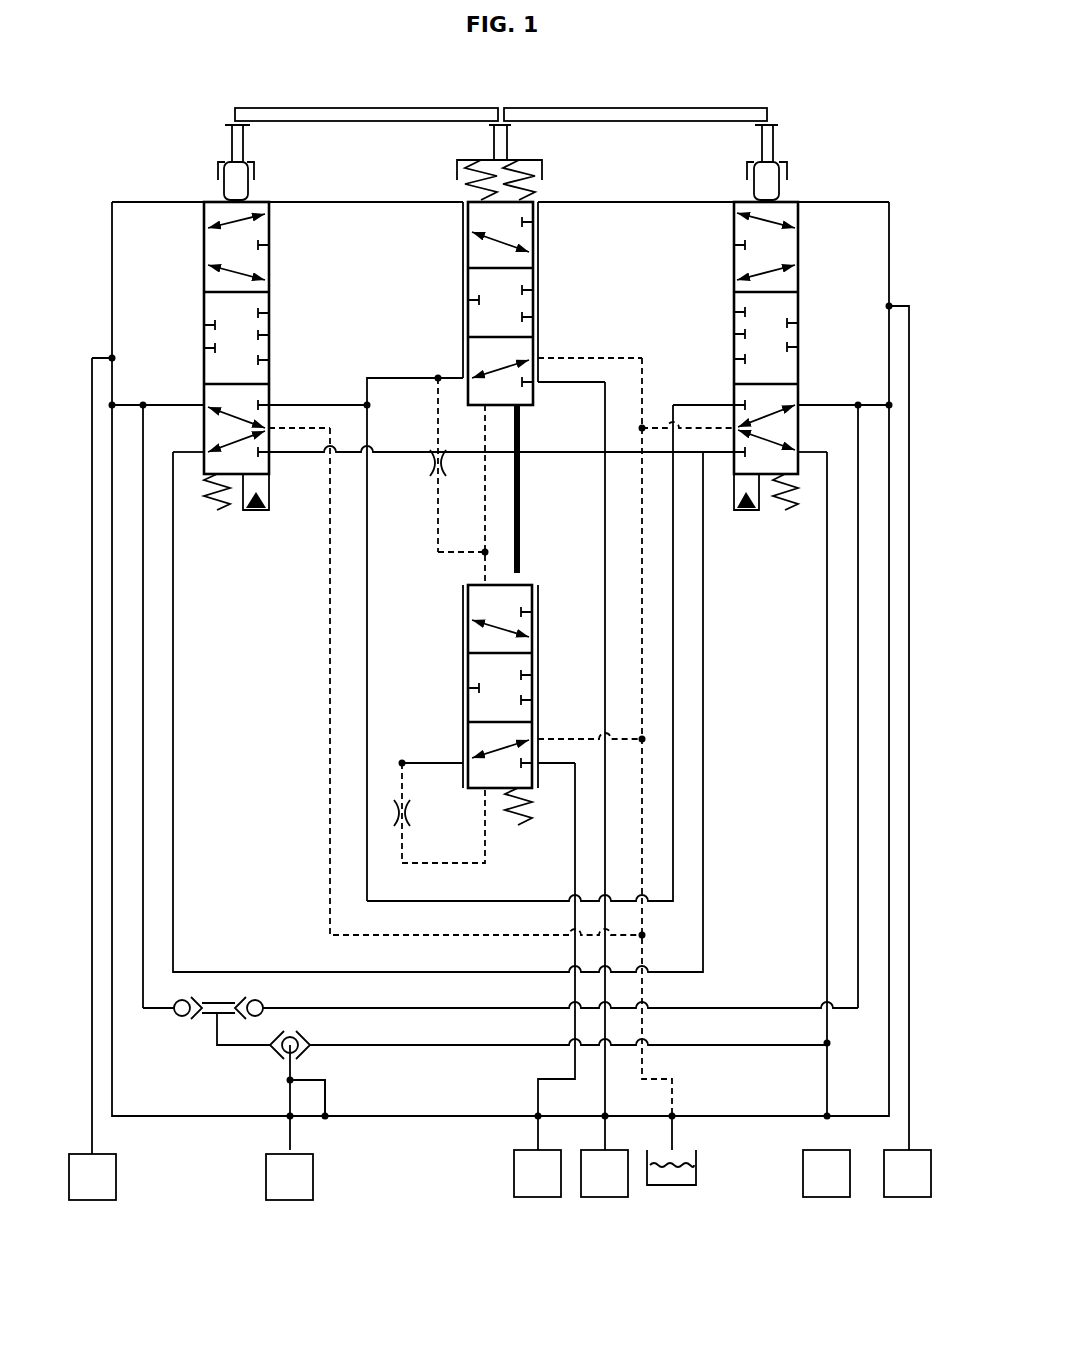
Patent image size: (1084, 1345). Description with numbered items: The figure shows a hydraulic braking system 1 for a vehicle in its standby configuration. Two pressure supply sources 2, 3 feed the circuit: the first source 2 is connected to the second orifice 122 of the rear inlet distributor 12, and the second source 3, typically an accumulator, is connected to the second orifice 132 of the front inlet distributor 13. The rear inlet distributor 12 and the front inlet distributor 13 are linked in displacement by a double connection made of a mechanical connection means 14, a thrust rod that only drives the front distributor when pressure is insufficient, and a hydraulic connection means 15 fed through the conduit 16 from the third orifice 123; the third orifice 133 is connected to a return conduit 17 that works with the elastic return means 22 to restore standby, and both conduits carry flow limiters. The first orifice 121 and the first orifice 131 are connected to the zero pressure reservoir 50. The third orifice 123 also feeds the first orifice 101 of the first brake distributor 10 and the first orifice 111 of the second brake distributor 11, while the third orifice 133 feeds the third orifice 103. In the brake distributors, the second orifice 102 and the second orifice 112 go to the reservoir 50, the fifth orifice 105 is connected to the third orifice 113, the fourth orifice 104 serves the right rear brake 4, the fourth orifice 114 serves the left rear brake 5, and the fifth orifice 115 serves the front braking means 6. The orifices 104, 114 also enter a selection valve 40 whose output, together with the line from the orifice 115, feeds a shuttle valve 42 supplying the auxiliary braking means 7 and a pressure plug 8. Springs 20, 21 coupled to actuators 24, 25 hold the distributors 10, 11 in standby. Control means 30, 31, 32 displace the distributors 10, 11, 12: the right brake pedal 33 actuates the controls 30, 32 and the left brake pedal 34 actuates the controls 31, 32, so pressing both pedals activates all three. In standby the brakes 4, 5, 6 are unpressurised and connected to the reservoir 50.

The hydraulic braking system 1 is at (718, 72).
The first pressure supply source 2 is at (605, 1197).
The second pressure supply source 3 is at (538, 1197).
The right rear brake 4 is at (92, 1200).
The left rear brake 5 is at (909, 1197).
The front braking means 6 is at (827, 1197).
The auxiliary braking means 7 is at (290, 1200).
The pressure plug 8 is at (325, 1118).
The first brake distributor 10 is at (272, 262).
The second brake distributor 11 is at (802, 252).
The rear inlet distributor 12 is at (540, 280).
The front inlet distributor 13 is at (540, 660).
The mechanical connection means 14 is at (520, 480).
The hydraulic connection means 15 is at (485, 460).
The conduit 16 is at (455, 554).
The return conduit 17 is at (402, 846).
The spring 20 is at (217, 496).
The spring 21 is at (790, 496).
The elastic return means 22 is at (515, 820).
The actuator 24 is at (269, 490).
The actuator 25 is at (742, 500).
The control means 30 is at (246, 140).
The control means 31 is at (758, 140).
The control means 32 is at (508, 140).
The right brake pedal 33 is at (358, 108).
The left brake pedal 34 is at (648, 108).
The selection valve 40 is at (205, 1015).
The shuttle valve 42 is at (280, 1050).
The zero pressure reservoir 50 is at (672, 1186).
The first orifice 101 is at (269, 405).
The second orifice 102 is at (269, 428).
The third orifice 103 is at (272, 452).
The fourth orifice 104 is at (204, 405).
The fifth orifice 105 is at (204, 452).
The first orifice 111 is at (734, 405).
The second orifice 112 is at (734, 428).
The third orifice 113 is at (734, 452).
The fourth orifice 114 is at (798, 405).
The fifth orifice 115 is at (798, 452).
The first orifice 121 is at (538, 358).
The second orifice 122 is at (538, 382).
The third orifice 123 is at (463, 378).
The first orifice 131 is at (538, 739).
The second orifice 132 is at (538, 765).
The third orifice 133 is at (463, 763).